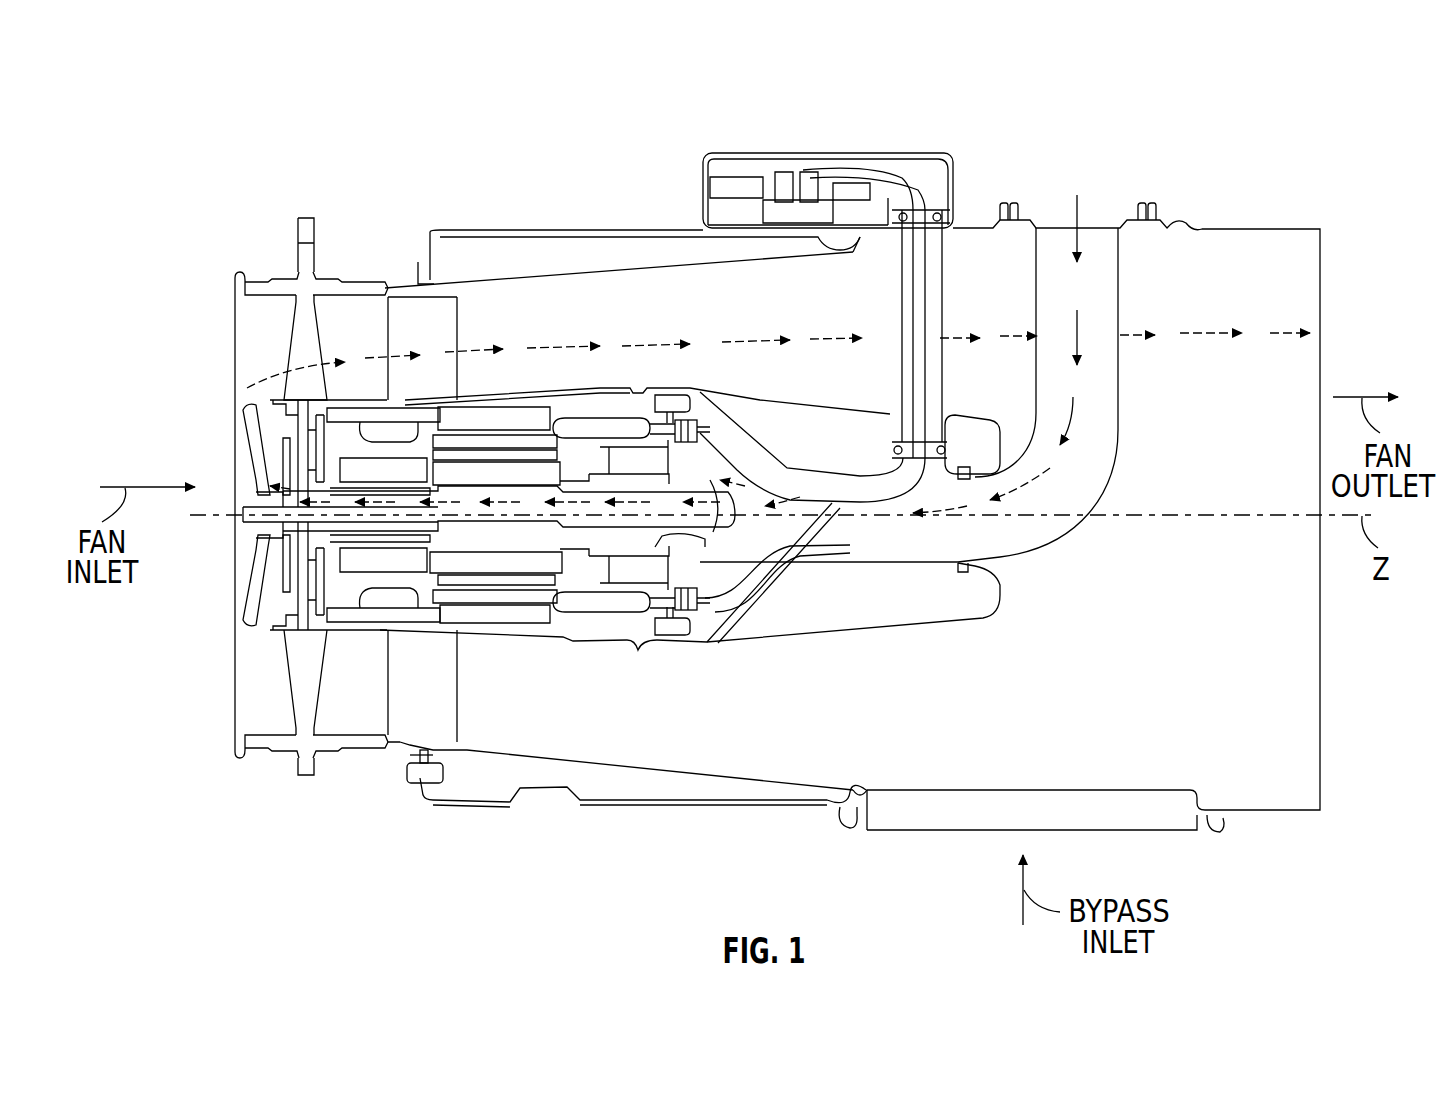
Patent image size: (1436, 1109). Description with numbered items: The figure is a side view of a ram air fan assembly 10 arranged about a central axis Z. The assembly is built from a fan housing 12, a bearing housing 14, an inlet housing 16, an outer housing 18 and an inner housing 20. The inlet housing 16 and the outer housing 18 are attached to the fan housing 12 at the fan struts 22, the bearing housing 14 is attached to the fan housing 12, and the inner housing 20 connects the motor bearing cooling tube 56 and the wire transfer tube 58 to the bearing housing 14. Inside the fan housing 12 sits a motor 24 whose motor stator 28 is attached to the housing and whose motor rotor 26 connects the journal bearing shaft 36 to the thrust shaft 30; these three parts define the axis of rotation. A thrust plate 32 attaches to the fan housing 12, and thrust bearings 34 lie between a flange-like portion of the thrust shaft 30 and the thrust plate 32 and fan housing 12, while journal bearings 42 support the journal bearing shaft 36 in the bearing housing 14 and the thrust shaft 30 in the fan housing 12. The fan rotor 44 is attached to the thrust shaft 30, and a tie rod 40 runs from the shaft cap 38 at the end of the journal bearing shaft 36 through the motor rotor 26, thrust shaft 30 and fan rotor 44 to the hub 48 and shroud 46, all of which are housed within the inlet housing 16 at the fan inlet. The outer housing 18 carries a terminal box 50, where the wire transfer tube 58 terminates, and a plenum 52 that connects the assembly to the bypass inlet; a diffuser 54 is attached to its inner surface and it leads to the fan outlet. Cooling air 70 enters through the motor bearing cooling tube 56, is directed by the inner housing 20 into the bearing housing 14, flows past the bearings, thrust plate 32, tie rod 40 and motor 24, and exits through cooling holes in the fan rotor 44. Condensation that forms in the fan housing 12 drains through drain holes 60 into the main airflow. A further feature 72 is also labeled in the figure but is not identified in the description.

The ram air fan assembly 10 is at (184, 130).
The fan housing 12 is at (378, 402).
The bearing housing 14 is at (715, 647).
The inlet housing 16 is at (282, 750).
The outer housing 18 is at (470, 802).
The inner housing 20 is at (846, 632).
The fan struts 22 is at (408, 307).
The motor 24 is at (470, 634).
The motor rotor 26 is at (497, 560).
The motor stator 28 is at (432, 613).
The thrust shaft 30 is at (378, 575).
The thrust plate 32 is at (302, 573).
The thrust bearings 34 is at (346, 460).
The journal bearing shaft 36 is at (715, 467).
The shaft cap 38 is at (735, 552).
The tie rod 40 is at (814, 568).
The journal bearings 42 is at (390, 465).
The fan rotor 44 is at (300, 660).
The shroud 46 is at (254, 568).
The hub 48 is at (256, 480).
The terminal box 50 is at (800, 152).
The plenum 52 is at (1143, 807).
The diffuser 54 is at (722, 768).
The motor bearing cooling tube 56 is at (1120, 290).
The wire transfer tube 58 is at (946, 275).
The drain holes 60 is at (641, 384).
The cooling air 70 is at (1082, 212).
The housing opening 72 is at (622, 592).